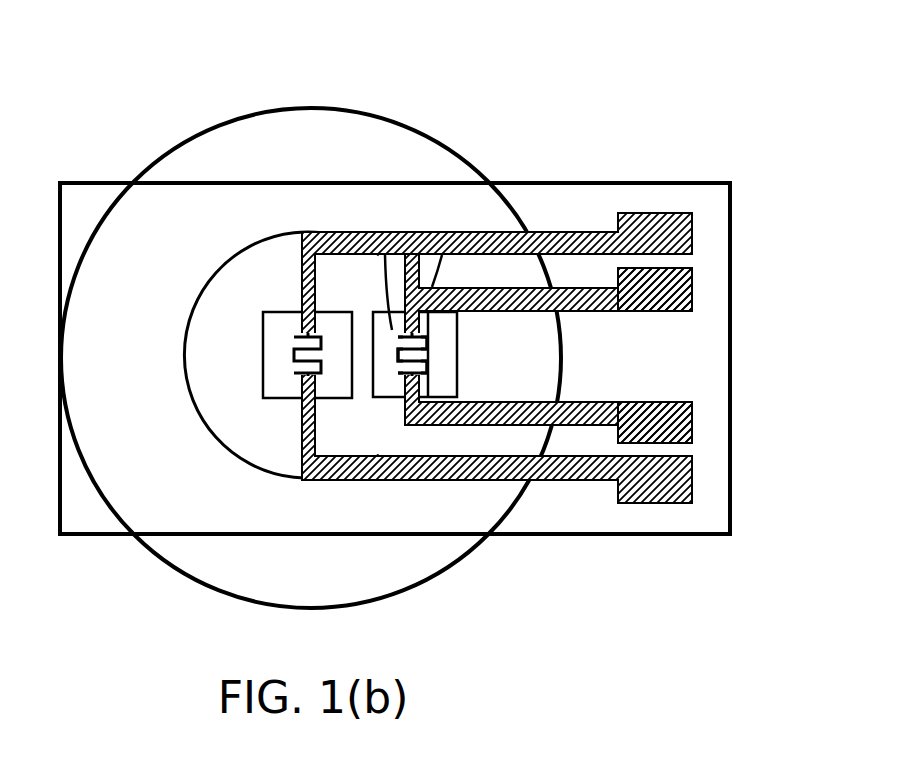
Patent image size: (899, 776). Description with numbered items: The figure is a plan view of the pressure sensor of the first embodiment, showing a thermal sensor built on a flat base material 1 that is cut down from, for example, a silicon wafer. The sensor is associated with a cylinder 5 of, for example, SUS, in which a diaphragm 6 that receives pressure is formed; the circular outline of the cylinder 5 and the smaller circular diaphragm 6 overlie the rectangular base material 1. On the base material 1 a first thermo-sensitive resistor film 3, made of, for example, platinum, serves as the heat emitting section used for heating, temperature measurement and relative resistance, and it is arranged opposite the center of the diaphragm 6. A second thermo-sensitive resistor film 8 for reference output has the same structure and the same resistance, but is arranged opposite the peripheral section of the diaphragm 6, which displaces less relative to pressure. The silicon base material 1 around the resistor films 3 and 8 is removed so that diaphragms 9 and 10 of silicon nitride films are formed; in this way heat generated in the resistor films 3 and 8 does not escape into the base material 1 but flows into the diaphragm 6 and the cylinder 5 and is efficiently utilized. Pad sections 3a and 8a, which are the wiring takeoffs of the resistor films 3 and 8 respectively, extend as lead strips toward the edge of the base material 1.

The flat base material 1 is at (672, 200).
The thermo-sensitive resistor film 3 is at (317, 330).
The pad section 3a is at (695, 223).
The cylinder 5 is at (232, 120).
The diaphragm 6 is at (248, 390).
The second thermo-sensitive resistor film 8 is at (473, 232).
The pad section 8a is at (692, 295).
The diaphragm 9 is at (275, 325).
The diaphragm 10 is at (412, 230).